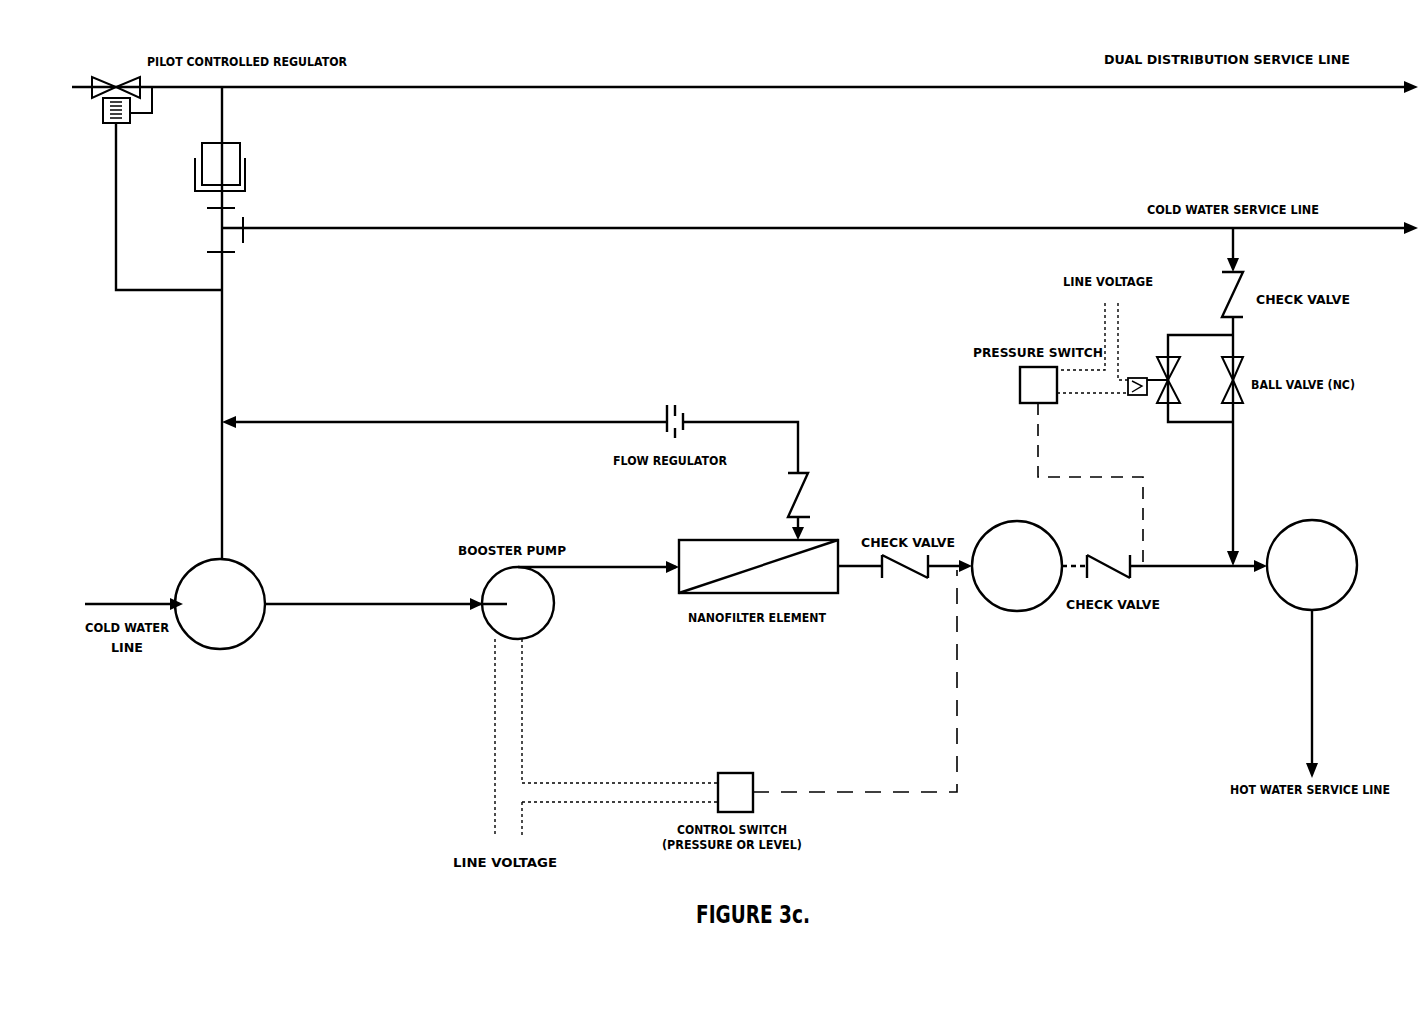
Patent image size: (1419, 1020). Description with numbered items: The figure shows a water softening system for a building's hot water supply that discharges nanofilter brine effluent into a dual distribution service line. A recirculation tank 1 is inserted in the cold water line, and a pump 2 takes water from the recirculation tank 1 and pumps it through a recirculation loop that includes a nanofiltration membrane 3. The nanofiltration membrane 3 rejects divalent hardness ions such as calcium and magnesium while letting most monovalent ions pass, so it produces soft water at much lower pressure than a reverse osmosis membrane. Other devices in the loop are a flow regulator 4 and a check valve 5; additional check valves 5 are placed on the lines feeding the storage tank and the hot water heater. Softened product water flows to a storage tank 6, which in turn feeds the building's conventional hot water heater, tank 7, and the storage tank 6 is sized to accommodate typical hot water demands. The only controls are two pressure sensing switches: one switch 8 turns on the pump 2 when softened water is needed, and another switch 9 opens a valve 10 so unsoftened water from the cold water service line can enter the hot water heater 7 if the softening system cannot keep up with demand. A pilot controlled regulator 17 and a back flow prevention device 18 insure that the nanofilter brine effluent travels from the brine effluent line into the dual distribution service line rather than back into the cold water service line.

The recirculation tank 1 is at (249, 565).
The pump 2 is at (483, 590).
The nanofiltration membrane 3 is at (678, 594).
The flow regulator 4 is at (666, 418).
The check valve 5 is at (790, 515).
The storage tank 6 is at (1035, 607).
The hot water heater tank 7 is at (1325, 521).
The pressure sensing switch 8 is at (723, 773).
The pressure sensing switch 9 is at (1020, 398).
The valve 10 is at (1158, 396).
The pilot controlled regulator 17 is at (98, 85).
The back flow prevention device 18 is at (241, 146).